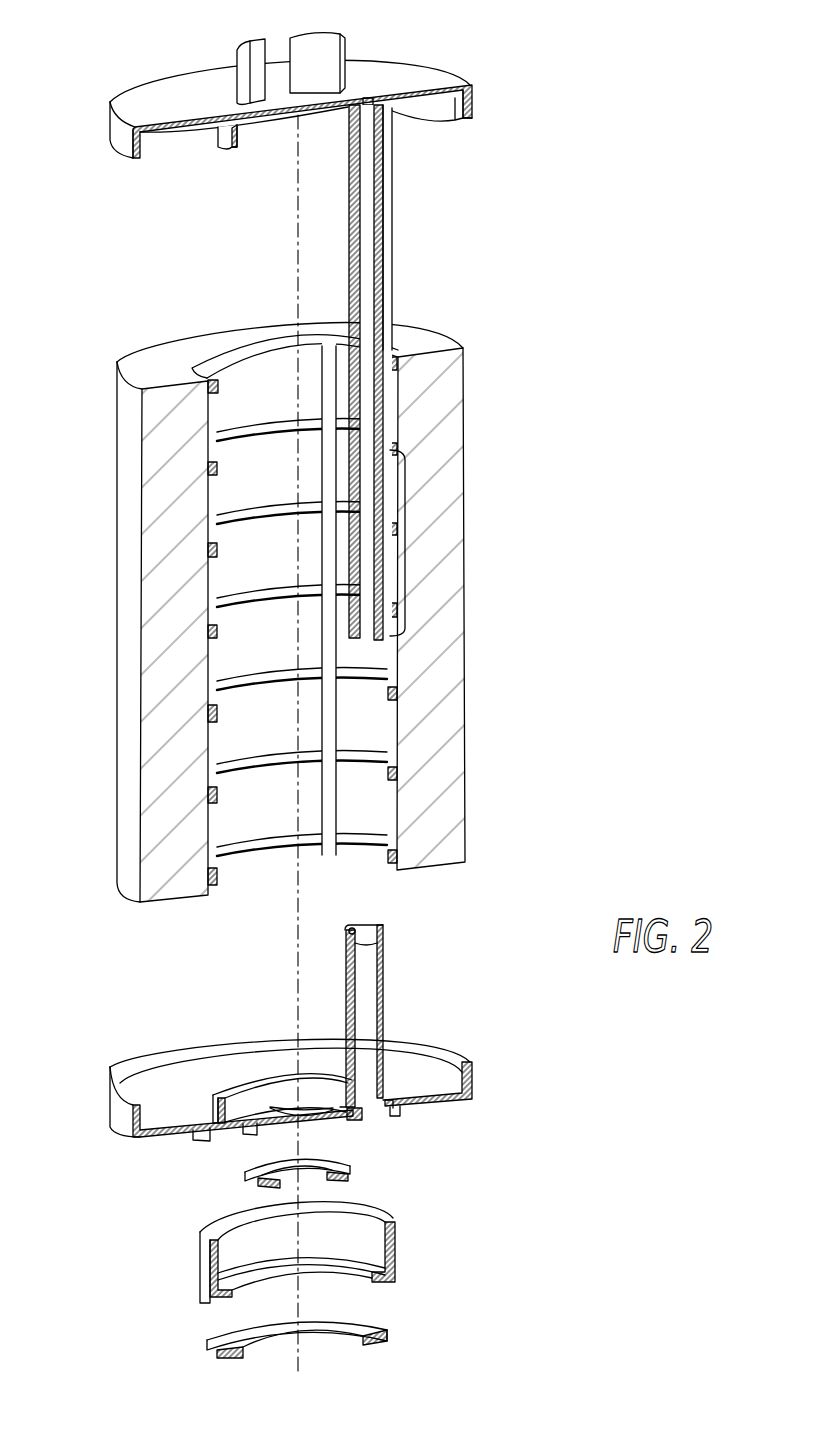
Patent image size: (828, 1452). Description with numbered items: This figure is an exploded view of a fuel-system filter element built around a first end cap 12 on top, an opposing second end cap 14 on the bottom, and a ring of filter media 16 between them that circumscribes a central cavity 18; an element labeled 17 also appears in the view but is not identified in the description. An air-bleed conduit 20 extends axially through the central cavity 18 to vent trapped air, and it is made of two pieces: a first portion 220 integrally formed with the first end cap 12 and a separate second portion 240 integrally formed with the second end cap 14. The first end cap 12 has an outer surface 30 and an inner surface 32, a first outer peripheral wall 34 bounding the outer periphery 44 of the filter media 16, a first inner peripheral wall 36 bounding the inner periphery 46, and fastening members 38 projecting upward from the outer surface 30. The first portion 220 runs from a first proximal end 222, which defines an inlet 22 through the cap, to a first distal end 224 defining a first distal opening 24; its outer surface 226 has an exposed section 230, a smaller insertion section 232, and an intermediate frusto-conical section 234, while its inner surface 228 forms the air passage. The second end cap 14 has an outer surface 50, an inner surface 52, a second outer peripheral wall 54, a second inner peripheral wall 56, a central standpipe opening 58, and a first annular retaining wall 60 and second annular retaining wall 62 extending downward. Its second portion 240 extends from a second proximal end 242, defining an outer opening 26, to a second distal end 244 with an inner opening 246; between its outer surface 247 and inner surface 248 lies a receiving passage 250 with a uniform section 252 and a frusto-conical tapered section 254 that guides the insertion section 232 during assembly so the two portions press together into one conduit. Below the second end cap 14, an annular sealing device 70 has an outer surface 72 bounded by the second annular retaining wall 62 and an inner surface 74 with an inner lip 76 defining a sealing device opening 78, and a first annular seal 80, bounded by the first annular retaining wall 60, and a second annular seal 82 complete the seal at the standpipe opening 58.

The first end cap 12 is at (304, 103).
The second end cap 14 is at (301, 1101).
The filter media 16 is at (274, 612).
The cage 17 is at (302, 614).
The central cavity 18 is at (392, 714).
The air-bleed conduit 20 is at (424, 606).
The inlet 22 is at (366, 98).
The first distal opening 24 is at (398, 690).
The outer opening 26 is at (362, 1108).
The outer surface 30 is at (447, 82).
The inner surface 32 is at (462, 118).
The first outer peripheral wall 34 is at (120, 160).
The first inner peripheral wall 36 is at (218, 140).
The fastening members 38 is at (308, 34).
The outer periphery 44 is at (142, 498).
The inner periphery 46 is at (220, 493).
The outer surface 50 is at (455, 1102).
The inner surface 52 is at (186, 1121).
The second outer peripheral wall 54 is at (118, 1128).
The second inner peripheral wall 56 is at (218, 1105).
The standpipe opening 58 is at (278, 1108).
The first annular retaining wall 60 is at (355, 1122).
The second annular retaining wall 62 is at (200, 1140).
The annular sealing device 70 is at (235, 642).
The outer surface 72 is at (200, 1280).
The inner surface 74 is at (390, 1256).
The inner lip 76 is at (375, 1282).
The sealing device opening 78 is at (240, 1275).
The first annular seal 80 is at (262, 1170).
The second annular seal 82 is at (390, 1336).
The first portion 220 is at (421, 392).
The first proximal end 222 is at (392, 108).
The first distal end 224 is at (368, 618).
The outer surface 226 is at (349, 212).
The inner surface 228 is at (361, 298).
The exposed section 230 is at (398, 235).
The insertion section 232 is at (414, 540).
The intermediate frusto-conical section 234 is at (380, 473).
The second portion 240 is at (424, 990).
The second proximal end 242 is at (395, 1100).
The second distal end 244 is at (385, 932).
The inner opening 246 is at (372, 930).
The outer surface 247 is at (385, 1008).
The inner surface 248 is at (370, 967).
The receiving passage 250 is at (368, 985).
The uniform section 252 is at (345, 1107).
The frusto-conical tapered section 254 is at (352, 928).